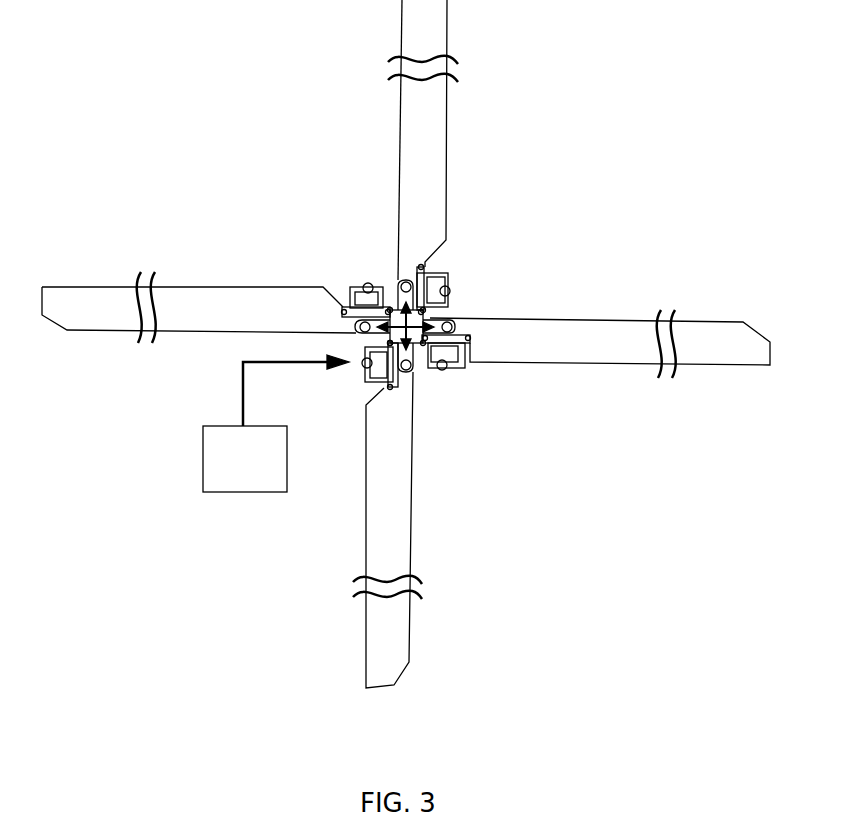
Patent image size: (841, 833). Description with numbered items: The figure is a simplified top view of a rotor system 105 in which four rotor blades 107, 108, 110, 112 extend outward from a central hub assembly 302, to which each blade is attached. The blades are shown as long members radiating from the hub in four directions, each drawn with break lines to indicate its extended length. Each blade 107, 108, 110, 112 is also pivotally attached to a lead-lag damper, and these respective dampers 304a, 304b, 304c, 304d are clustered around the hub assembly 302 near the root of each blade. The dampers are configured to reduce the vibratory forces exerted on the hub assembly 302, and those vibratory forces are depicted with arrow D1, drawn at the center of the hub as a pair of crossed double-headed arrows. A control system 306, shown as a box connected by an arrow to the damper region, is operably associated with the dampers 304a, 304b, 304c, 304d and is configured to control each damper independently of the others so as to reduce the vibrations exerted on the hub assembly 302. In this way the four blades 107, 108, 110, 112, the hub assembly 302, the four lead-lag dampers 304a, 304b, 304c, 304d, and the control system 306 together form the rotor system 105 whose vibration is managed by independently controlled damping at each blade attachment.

The rotor system 105 is at (576, 184).
The rotor blade 107 is at (448, 122).
The rotor blade 108 is at (578, 365).
The rotor blade 110 is at (415, 472).
The rotor blade 112 is at (240, 287).
The hub assembly 302 is at (396, 311).
The lead-lag damper 304a is at (450, 277).
The lead-lag damper 304b is at (467, 362).
The lead-lag damper 304c is at (369, 386).
The lead-lag damper 304d is at (346, 289).
The control system 306 is at (202, 462).
The arrow D1 is at (421, 344).